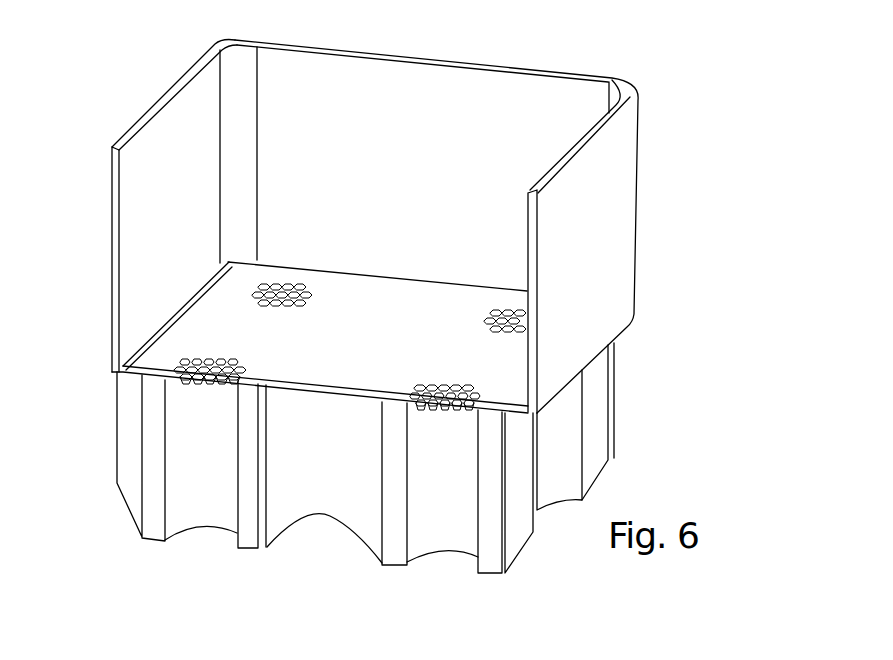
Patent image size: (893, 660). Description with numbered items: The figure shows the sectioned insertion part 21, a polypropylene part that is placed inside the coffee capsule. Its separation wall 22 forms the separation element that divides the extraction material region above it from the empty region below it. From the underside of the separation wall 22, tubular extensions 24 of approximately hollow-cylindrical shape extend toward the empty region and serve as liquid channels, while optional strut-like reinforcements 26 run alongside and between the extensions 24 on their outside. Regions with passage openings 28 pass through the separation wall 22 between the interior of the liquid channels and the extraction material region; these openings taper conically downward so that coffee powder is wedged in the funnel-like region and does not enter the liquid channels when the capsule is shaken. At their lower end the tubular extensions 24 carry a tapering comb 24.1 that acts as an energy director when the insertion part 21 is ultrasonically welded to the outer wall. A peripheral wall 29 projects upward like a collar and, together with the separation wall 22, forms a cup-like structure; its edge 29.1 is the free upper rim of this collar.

The insertion part 21 is at (652, 236).
The separation wall 22 is at (337, 353).
The tubular extensions 24 is at (479, 514).
The tapering comb 24.1 is at (247, 550).
The strut-like reinforcements 26 is at (335, 467).
The passage openings 28 is at (468, 390).
The peripheral wall 29 is at (573, 112).
The edge of the peripheral wall 29.1 is at (158, 100).